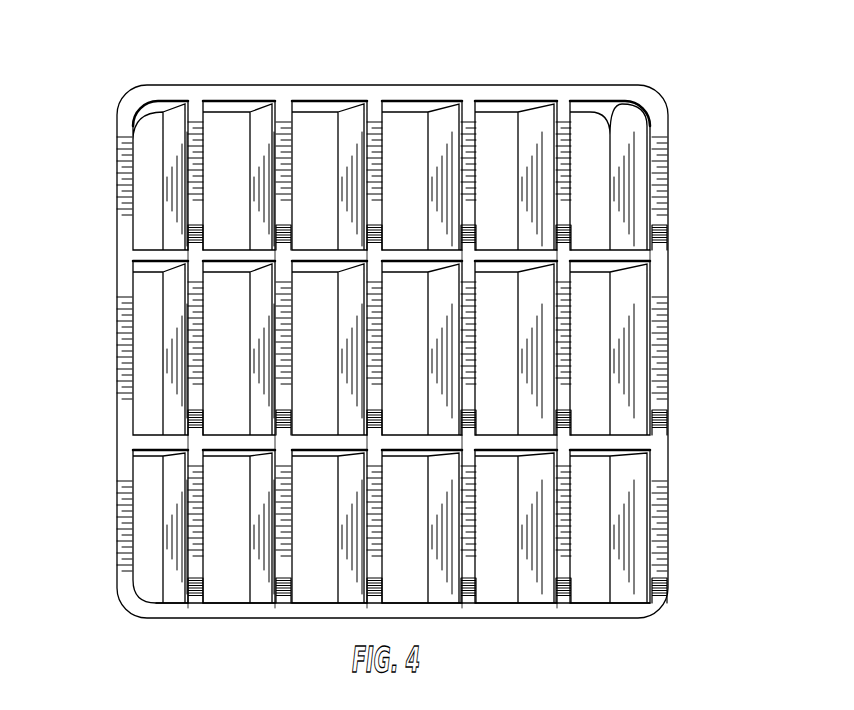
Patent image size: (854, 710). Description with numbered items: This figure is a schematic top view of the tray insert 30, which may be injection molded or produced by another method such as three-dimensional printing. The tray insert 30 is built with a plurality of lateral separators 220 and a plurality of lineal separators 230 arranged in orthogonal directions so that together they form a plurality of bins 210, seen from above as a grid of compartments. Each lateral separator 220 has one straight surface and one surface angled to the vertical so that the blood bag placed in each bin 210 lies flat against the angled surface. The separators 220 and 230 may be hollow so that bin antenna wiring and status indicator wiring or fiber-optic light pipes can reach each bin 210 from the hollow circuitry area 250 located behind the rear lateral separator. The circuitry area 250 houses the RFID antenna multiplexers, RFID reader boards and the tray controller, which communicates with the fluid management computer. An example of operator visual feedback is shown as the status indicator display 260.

The tray insert 30 is at (700, 139).
The bin 210 is at (218, 188).
The lateral separator 220 is at (155, 192).
The lineal separator 230 is at (157, 287).
The circuitry area 250 is at (668, 332).
The status indicator display 260 is at (668, 423).